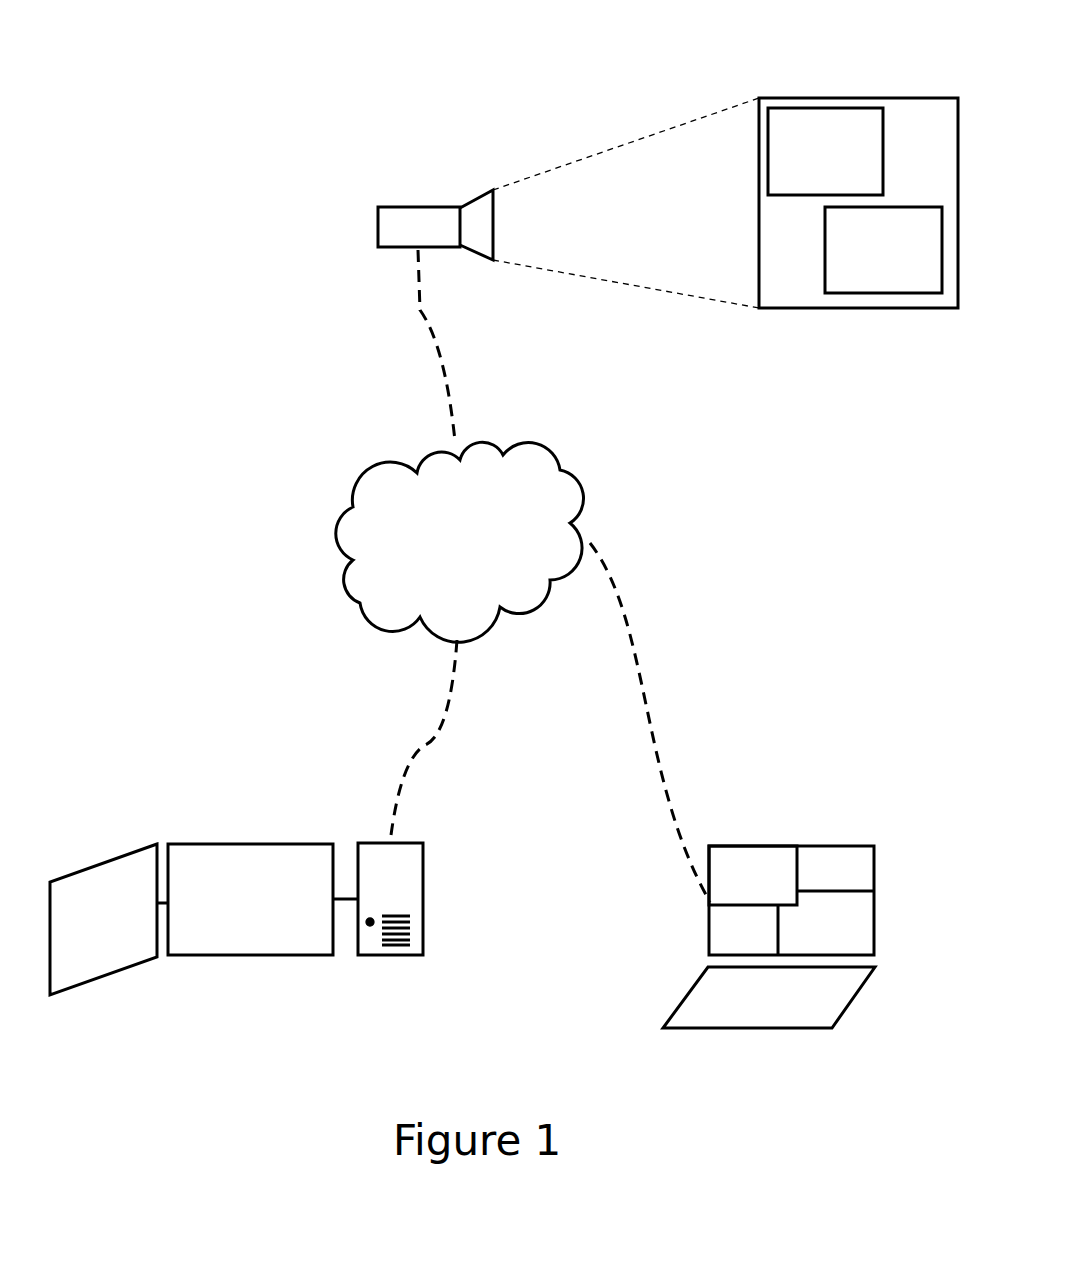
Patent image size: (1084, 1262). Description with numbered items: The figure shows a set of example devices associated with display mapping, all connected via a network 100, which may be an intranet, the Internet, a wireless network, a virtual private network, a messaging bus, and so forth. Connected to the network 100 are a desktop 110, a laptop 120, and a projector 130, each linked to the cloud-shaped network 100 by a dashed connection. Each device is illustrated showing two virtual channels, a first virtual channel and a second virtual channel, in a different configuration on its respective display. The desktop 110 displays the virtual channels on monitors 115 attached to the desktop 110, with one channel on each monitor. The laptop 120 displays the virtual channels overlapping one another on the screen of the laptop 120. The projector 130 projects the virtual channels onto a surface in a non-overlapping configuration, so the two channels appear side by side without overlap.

The network 100 is at (523, 576).
The desktop 110 is at (438, 1003).
The monitors 115 is at (250, 957).
The laptop 120 is at (862, 775).
The projector 130 is at (418, 207).